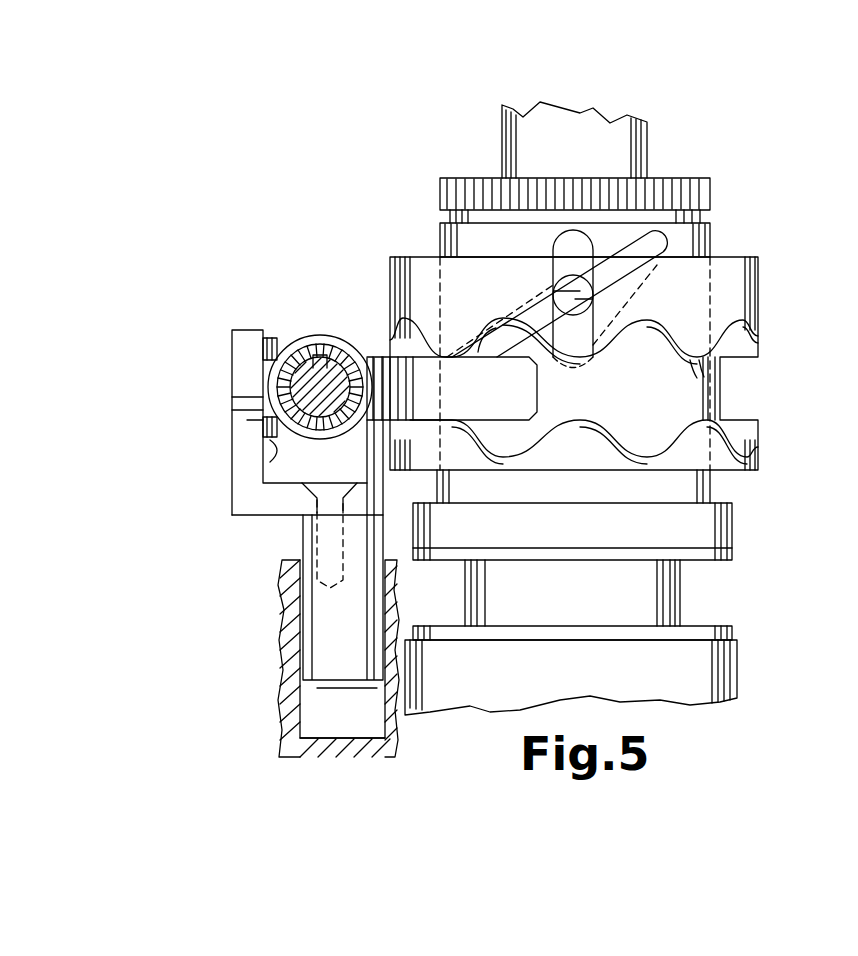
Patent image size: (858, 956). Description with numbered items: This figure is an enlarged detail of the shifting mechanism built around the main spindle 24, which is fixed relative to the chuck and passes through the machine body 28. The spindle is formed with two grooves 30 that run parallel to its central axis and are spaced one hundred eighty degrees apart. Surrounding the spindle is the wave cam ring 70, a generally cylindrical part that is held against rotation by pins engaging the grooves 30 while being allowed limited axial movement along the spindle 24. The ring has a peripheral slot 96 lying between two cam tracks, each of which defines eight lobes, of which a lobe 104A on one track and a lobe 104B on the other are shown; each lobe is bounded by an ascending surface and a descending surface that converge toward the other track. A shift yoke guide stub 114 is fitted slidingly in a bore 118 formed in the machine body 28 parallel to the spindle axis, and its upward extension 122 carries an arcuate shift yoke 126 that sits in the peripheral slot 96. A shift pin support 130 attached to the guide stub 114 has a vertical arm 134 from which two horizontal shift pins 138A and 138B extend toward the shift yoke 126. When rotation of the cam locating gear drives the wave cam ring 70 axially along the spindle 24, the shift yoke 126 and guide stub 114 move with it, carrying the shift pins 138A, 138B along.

The main spindle 24 is at (624, 152).
The wave cam ring 70 is at (407, 256).
The groove 30 is at (554, 290).
The lobe 104A is at (577, 343).
The peripheral slot 96 is at (738, 387).
The shift yoke 126 is at (530, 395).
The upward extension 122 is at (415, 492).
The lobe 104B is at (697, 432).
The shift pin 138B is at (278, 345).
The vertical arm 134 is at (242, 380).
The shift pin 138A is at (263, 463).
The shift pin support 130 is at (256, 518).
The shift yoke guide stub 114 is at (318, 618).
The machine body 28 is at (292, 710).
The bore 118 is at (303, 700).